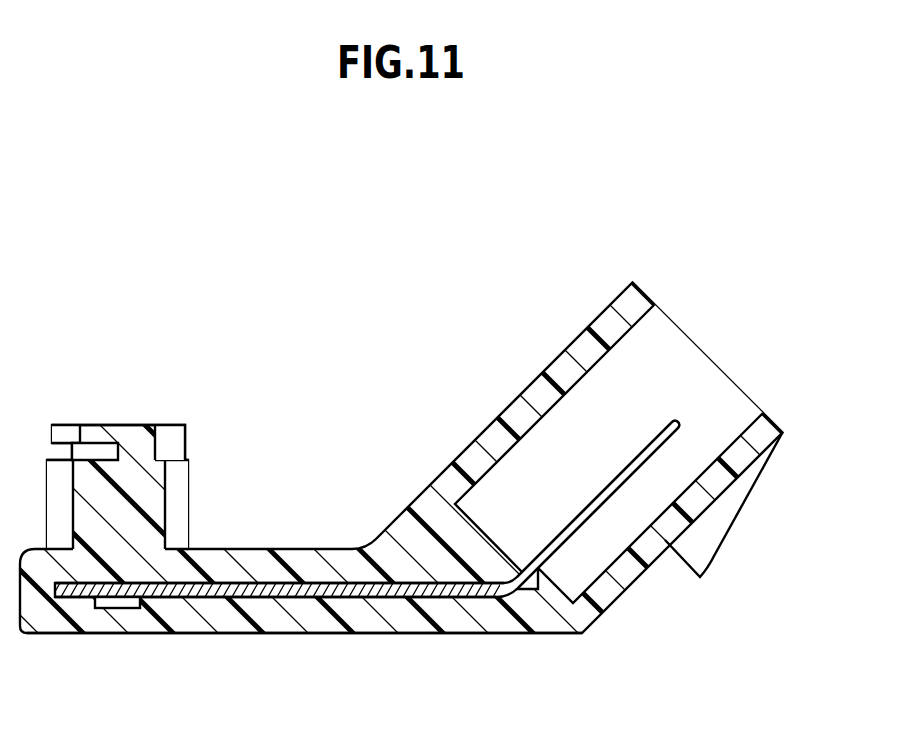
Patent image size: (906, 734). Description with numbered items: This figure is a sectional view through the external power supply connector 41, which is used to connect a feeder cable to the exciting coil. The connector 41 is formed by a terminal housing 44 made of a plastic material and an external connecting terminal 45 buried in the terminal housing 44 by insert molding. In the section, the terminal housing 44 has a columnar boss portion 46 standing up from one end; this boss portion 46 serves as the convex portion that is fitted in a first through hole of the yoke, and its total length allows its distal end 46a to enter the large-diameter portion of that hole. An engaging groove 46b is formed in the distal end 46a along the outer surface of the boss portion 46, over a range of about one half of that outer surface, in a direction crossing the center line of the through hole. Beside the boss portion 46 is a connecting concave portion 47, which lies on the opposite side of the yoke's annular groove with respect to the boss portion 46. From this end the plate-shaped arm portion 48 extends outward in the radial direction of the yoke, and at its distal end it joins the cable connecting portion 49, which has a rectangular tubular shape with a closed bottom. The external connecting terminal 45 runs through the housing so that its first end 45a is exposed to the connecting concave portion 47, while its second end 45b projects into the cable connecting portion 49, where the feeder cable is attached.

The external power supply connector 41 is at (467, 449).
The terminal housing 44 is at (421, 636).
The external connecting terminal 45 is at (413, 492).
The first end 45a is at (95, 604).
The second end 45b is at (652, 446).
The boss portion 46 is at (191, 506).
The distal end 46a is at (186, 441).
The engaging groove 46b is at (106, 453).
The connecting concave portion 47 is at (162, 618).
The arm portion 48 is at (280, 618).
The cable connecting portion 49 is at (585, 352).